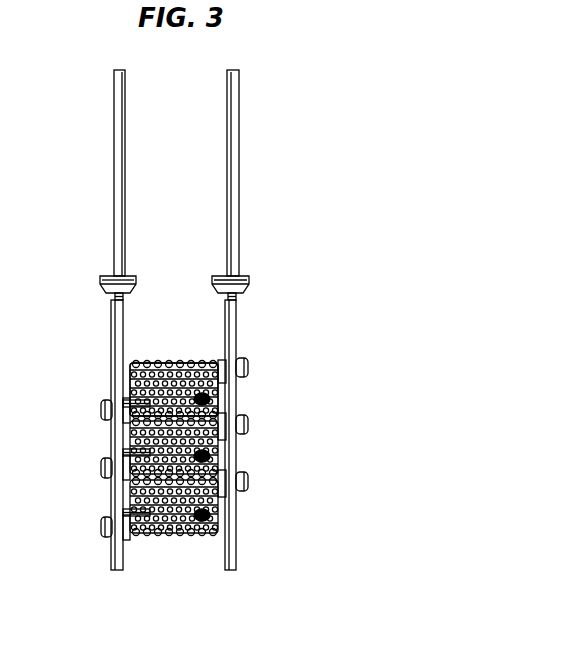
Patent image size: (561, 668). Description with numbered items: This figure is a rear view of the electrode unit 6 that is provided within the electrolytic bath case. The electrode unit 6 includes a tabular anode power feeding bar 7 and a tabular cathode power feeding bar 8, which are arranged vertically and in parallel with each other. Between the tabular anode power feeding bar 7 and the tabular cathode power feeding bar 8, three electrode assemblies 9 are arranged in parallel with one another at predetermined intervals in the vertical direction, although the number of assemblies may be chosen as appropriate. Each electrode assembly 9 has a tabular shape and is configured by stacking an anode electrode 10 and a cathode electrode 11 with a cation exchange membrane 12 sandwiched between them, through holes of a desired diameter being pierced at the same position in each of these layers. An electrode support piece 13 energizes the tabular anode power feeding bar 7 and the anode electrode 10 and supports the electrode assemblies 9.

The electrode unit 6 is at (266, 230).
The tabular anode power feeding bar 7 is at (112, 338).
The tabular cathode power feeding bar 8 is at (236, 333).
The electrode assembly 9 is at (162, 355).
The anode electrode 10 is at (212, 390).
The cathode electrode 11 is at (196, 364).
The cation exchange membrane 12 is at (200, 386).
The electrode support piece 13 is at (136, 537).